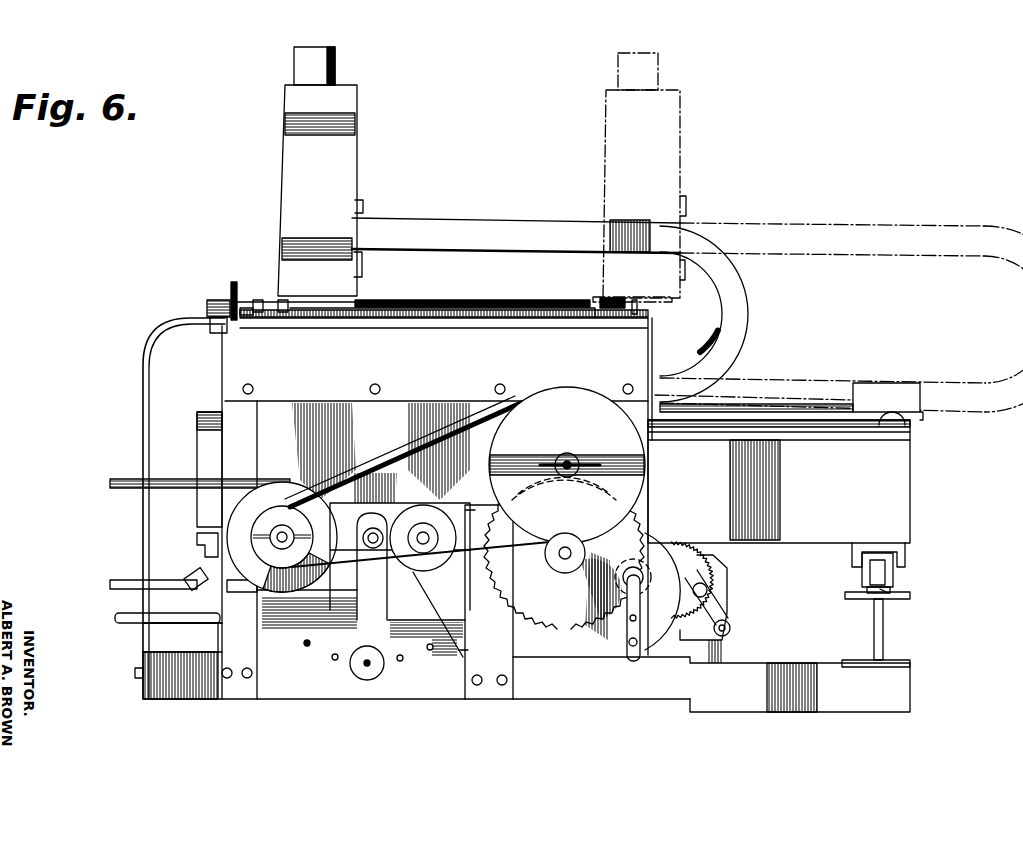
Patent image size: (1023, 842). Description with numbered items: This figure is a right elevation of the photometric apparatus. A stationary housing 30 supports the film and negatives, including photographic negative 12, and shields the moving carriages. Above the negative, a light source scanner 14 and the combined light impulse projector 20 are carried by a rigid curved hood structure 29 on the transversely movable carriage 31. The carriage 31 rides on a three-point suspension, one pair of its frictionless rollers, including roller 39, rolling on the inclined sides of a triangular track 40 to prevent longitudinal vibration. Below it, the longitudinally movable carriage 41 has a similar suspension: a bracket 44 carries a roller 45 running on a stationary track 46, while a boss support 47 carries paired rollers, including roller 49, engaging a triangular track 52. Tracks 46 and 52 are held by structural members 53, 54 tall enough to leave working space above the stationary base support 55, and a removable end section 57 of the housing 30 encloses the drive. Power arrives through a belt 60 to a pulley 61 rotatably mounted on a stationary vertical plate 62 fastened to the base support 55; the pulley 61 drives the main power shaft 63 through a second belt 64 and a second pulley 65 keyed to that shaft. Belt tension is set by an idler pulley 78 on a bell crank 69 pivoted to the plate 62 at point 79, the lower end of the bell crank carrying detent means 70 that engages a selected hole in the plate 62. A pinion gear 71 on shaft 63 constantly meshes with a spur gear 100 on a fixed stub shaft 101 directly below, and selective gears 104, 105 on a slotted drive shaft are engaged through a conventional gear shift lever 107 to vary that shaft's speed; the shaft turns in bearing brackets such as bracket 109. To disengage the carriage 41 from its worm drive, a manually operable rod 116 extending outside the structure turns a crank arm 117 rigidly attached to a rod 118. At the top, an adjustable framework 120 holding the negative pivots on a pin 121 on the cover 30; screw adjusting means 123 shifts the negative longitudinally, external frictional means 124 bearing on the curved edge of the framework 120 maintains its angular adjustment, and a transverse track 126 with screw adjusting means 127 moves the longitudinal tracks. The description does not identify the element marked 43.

The photographic negative 12 is at (530, 302).
The light source scanner 14 is at (345, 150).
The amplified and combined light impulse projector 20 is at (340, 62).
The rigid curved hood structure 29 is at (515, 222).
The stationary housing 30 is at (143, 366).
The movable carriage 31 is at (752, 316).
The roller 39 is at (888, 432).
The track 40 is at (758, 424).
The carriage 41 is at (903, 555).
The block 43 is at (905, 496).
The bracket 44 is at (867, 590).
The roller 45 is at (862, 575).
The stationary track 46 is at (890, 592).
The boss support 47 is at (200, 548).
The roller 49 is at (190, 574).
The track 52 is at (198, 590).
The structural member 53 is at (883, 630).
The structural member 54 is at (218, 637).
The stationary base support 55 is at (905, 686).
The removable end section 57 is at (268, 433).
The belt 60 is at (133, 479).
The pulley 61 is at (278, 494).
The stationary vertical plate 62 is at (305, 677).
The main power shaft 63 is at (572, 452).
The second belt 64 is at (425, 450).
The second pulley 65 is at (578, 390).
The bell crank 69 is at (380, 600).
The detent means 70 is at (384, 668).
The pinion gear 71 is at (545, 478).
The idler pulley 78 is at (433, 520).
The pivot point 79 is at (375, 527).
The spur gear 100 is at (625, 559).
The fixed stub shaft 101 is at (560, 568).
The selective gear 104 is at (684, 540).
The selective gear 105 is at (662, 517).
The gear shift lever 107 is at (627, 632).
The bearing bracket 109 is at (727, 570).
The manually operable rod 116 is at (118, 623).
The crank arm 117 is at (728, 622).
The rod 118 is at (728, 596).
The adjustable framework 120 is at (238, 322).
The pin 121 is at (615, 298).
The screw adjusting means 123 is at (432, 300).
The external frictional means 124 is at (207, 306).
The transverse track 126 is at (286, 322).
The screw adjusting means 127 is at (236, 280).